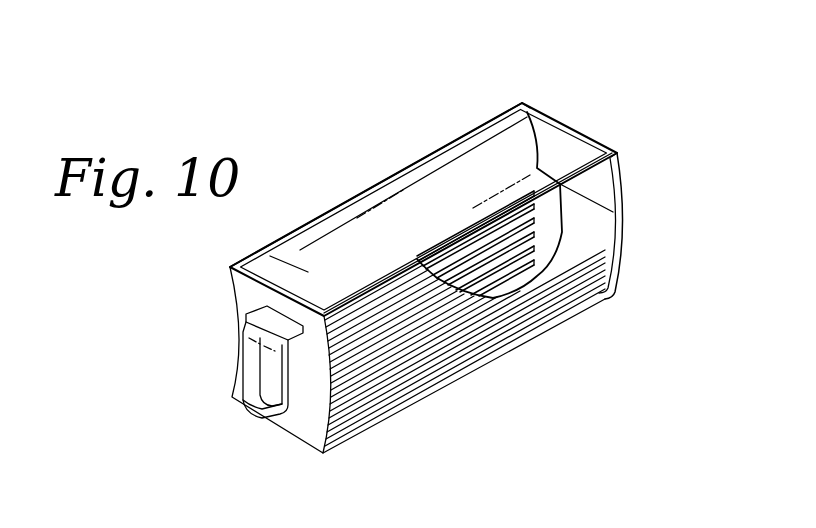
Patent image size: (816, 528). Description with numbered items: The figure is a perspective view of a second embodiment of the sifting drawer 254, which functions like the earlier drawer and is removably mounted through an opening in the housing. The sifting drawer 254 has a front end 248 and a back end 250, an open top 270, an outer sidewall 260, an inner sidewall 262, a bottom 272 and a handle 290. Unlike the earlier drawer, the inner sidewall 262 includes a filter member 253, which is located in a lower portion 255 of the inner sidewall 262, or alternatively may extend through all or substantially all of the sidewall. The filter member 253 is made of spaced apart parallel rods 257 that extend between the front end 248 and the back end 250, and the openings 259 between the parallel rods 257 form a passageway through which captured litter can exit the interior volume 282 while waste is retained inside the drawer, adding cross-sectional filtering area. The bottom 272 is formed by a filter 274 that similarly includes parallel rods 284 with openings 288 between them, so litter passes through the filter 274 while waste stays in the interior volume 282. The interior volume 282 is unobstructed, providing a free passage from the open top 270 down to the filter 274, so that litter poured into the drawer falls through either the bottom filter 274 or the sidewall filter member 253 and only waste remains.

The front end 248 is at (248, 312).
The back end 250 is at (622, 182).
The filter member 253 is at (540, 165).
The sifting drawer 254 is at (591, 78).
The lower portion 255 is at (561, 184).
The parallel rods 257 is at (438, 250).
The openings 259 is at (460, 240).
The outer sidewall 260 is at (615, 201).
The inner sidewall 262 is at (493, 157).
The open top 270 is at (323, 237).
The bottom 272 is at (393, 367).
The filter 274 is at (443, 368).
The interior volume 282 is at (258, 252).
The parallel rods 284 is at (480, 363).
The openings 288 is at (622, 271).
The handle 290 is at (253, 380).